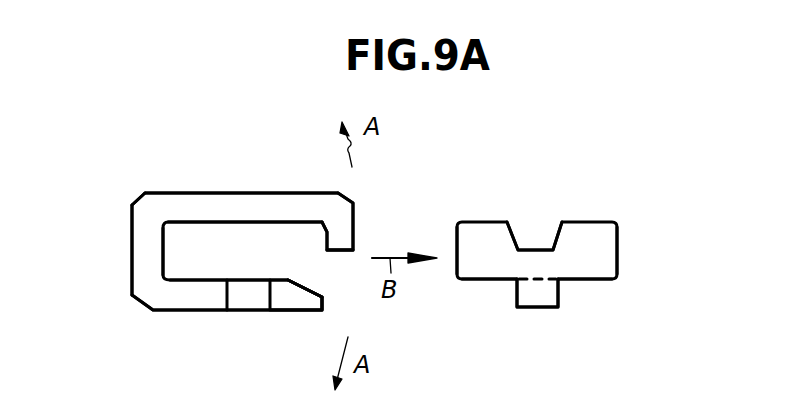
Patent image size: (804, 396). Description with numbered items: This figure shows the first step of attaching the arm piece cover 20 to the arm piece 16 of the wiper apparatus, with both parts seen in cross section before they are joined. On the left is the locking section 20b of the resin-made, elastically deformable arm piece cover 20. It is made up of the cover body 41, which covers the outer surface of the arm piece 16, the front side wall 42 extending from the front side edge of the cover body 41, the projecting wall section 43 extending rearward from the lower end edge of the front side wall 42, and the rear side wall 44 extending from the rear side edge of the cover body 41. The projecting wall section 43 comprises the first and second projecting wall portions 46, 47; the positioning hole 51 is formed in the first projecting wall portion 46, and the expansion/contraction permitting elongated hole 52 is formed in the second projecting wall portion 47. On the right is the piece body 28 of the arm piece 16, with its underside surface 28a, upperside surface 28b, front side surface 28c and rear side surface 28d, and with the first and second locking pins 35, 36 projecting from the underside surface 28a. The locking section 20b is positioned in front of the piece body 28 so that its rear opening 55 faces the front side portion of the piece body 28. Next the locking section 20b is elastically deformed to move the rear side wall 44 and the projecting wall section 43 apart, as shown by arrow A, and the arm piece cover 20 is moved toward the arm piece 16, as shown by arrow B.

The arm piece cover 20 is at (152, 183).
The locking section 20b is at (132, 204).
The cover body 41 is at (233, 198).
The front side wall 42 is at (132, 253).
The projecting wall section 43 is at (217, 332).
The first projecting wall portion 46 is at (217, 332).
The second projecting wall portion 47 is at (190, 310).
The rear side wall 44 is at (353, 222).
The expansion/contraction permitting elongated hole 52 is at (285, 332).
The positioning hole 51 is at (270, 298).
The rear opening 55 is at (327, 270).
The arm piece 16 is at (569, 237).
The piece body 28 is at (616, 215).
The underside surface 28a is at (498, 281).
The upperside surface 28b is at (493, 222).
The front side surface 28c is at (457, 242).
The rear side surface 28d is at (617, 243).
The second locking pin 36 is at (606, 311).
The first locking pin 35 is at (558, 297).